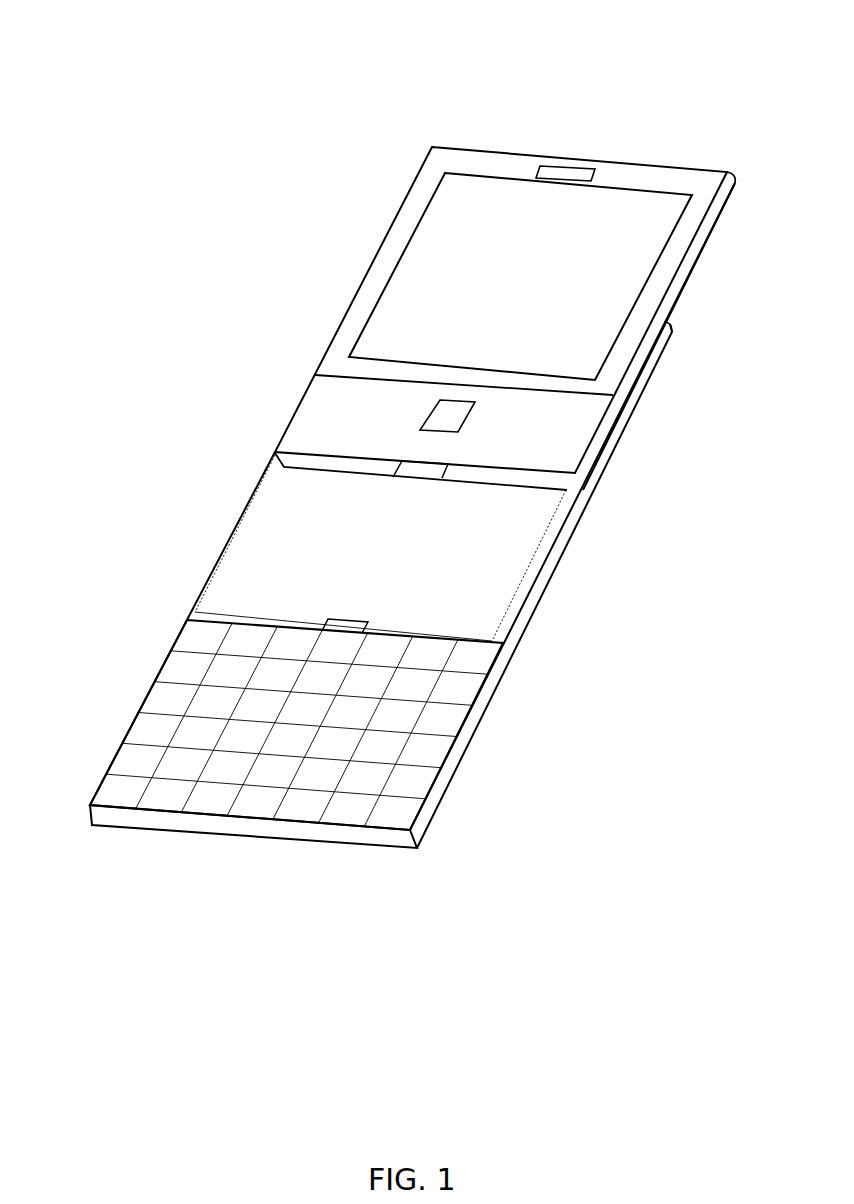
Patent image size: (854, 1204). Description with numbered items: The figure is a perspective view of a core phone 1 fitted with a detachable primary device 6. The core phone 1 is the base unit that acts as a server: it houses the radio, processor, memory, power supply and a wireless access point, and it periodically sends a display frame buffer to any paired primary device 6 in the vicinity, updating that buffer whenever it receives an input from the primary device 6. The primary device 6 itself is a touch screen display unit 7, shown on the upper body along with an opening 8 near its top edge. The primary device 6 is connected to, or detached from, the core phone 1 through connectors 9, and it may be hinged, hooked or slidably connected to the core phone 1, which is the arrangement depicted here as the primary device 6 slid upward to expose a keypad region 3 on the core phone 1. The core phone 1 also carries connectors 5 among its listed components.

The core phone 1 is at (170, 571).
The keypad 3 is at (367, 717).
The connectors 5 is at (330, 624).
The detachable primary device 6 is at (345, 253).
The touch screen display unit 7 is at (612, 285).
The speaker 8 is at (568, 175).
The connectors 9 is at (420, 470).